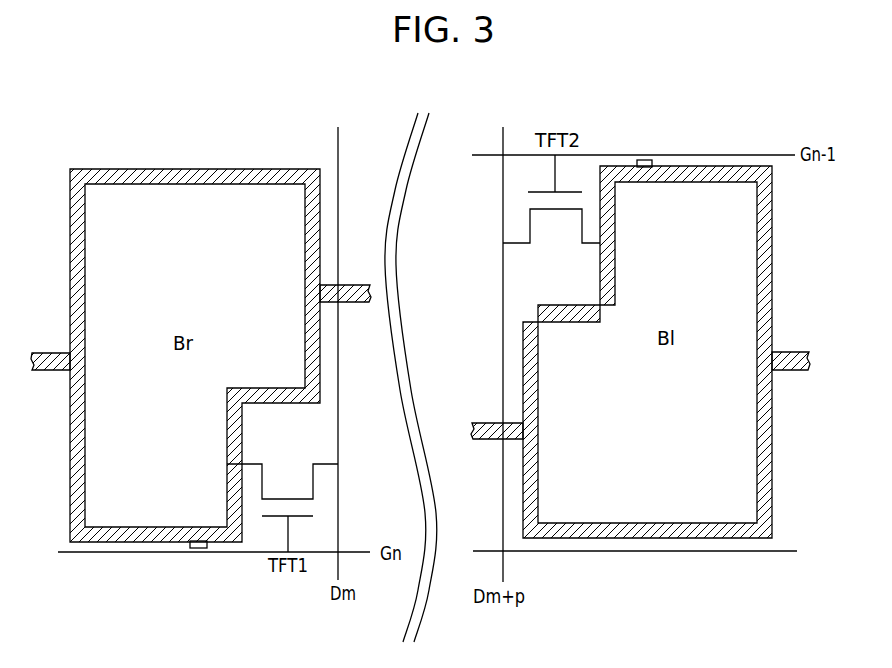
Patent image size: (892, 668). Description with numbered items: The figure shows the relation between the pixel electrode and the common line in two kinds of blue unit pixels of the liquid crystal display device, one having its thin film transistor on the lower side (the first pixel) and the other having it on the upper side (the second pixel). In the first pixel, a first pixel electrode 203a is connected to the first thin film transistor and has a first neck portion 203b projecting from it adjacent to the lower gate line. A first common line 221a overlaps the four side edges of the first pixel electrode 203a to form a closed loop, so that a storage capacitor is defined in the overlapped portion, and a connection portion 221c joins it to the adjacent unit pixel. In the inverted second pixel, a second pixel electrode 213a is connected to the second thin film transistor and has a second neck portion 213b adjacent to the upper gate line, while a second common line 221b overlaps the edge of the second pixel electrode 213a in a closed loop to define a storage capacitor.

The first pixel electrode 203a is at (199, 169).
The first neck portion 203b is at (198, 549).
The first common line 221a is at (110, 542).
The second common line 221b is at (700, 539).
The connection portion 221c is at (370, 302).
The second pixel electrode 213a is at (601, 539).
The second neck portion 213b is at (646, 160).